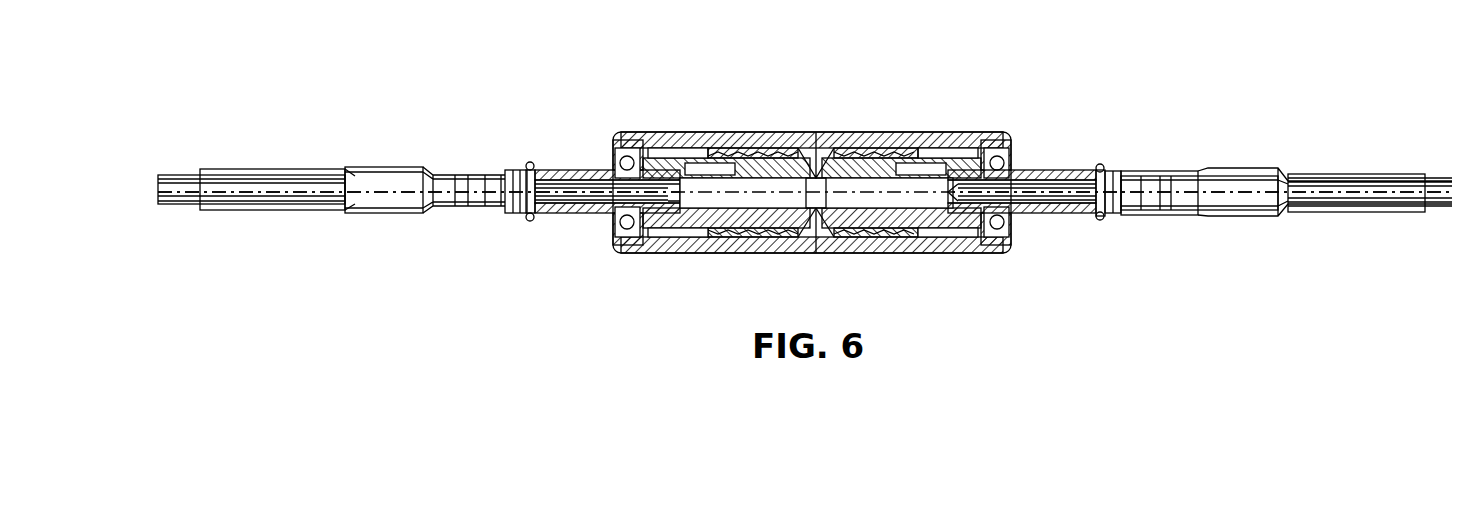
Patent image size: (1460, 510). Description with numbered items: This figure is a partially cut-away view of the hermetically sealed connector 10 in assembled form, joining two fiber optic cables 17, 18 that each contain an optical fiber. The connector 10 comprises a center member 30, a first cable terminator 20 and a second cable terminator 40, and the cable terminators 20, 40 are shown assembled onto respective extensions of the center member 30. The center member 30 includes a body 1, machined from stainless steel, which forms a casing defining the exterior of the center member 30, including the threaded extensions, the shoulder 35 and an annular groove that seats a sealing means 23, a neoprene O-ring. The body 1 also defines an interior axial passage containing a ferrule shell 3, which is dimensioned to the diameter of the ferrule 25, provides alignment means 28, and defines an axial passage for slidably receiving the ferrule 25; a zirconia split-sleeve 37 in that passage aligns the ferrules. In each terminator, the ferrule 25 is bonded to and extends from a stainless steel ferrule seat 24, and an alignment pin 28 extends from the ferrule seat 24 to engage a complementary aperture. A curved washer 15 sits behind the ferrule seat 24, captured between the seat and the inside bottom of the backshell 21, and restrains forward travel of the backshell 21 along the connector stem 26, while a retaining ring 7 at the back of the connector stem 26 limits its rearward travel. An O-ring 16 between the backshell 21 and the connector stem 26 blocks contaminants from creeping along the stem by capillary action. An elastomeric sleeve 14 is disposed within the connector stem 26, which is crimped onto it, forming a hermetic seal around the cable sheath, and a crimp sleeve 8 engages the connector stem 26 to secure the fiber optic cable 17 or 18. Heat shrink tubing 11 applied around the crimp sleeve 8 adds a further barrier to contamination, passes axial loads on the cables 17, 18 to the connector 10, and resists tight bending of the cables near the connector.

The hermetically sealed connector 10 is at (477, 34).
The fiber optic cable 18 is at (172, 166).
The fiber optic cable 17 is at (1440, 166).
The O-ring 16 is at (607, 128).
The curved washer 15 is at (637, 124).
The ferrule 25 is at (668, 124).
The split-sleeve 37 is at (743, 124).
The center member 30 is at (797, 124).
The ferrule shell 3 is at (815, 124).
The sealing means 23 is at (835, 124).
The pin 28 is at (920, 124).
The backshell 21 is at (943, 124).
The connector stem 26 is at (1035, 162).
The retaining ring 7 is at (1092, 162).
The heat shrink tubing 11 is at (1167, 163).
The crimp sleeve 8 is at (1227, 160).
The first cable terminator 20 is at (605, 235).
The shoulder 35 is at (793, 245).
The body 1 is at (815, 245).
The ferrule seat 24 is at (926, 236).
The sleeve 14 is at (970, 245).
The second cable terminator 40 is at (1010, 230).